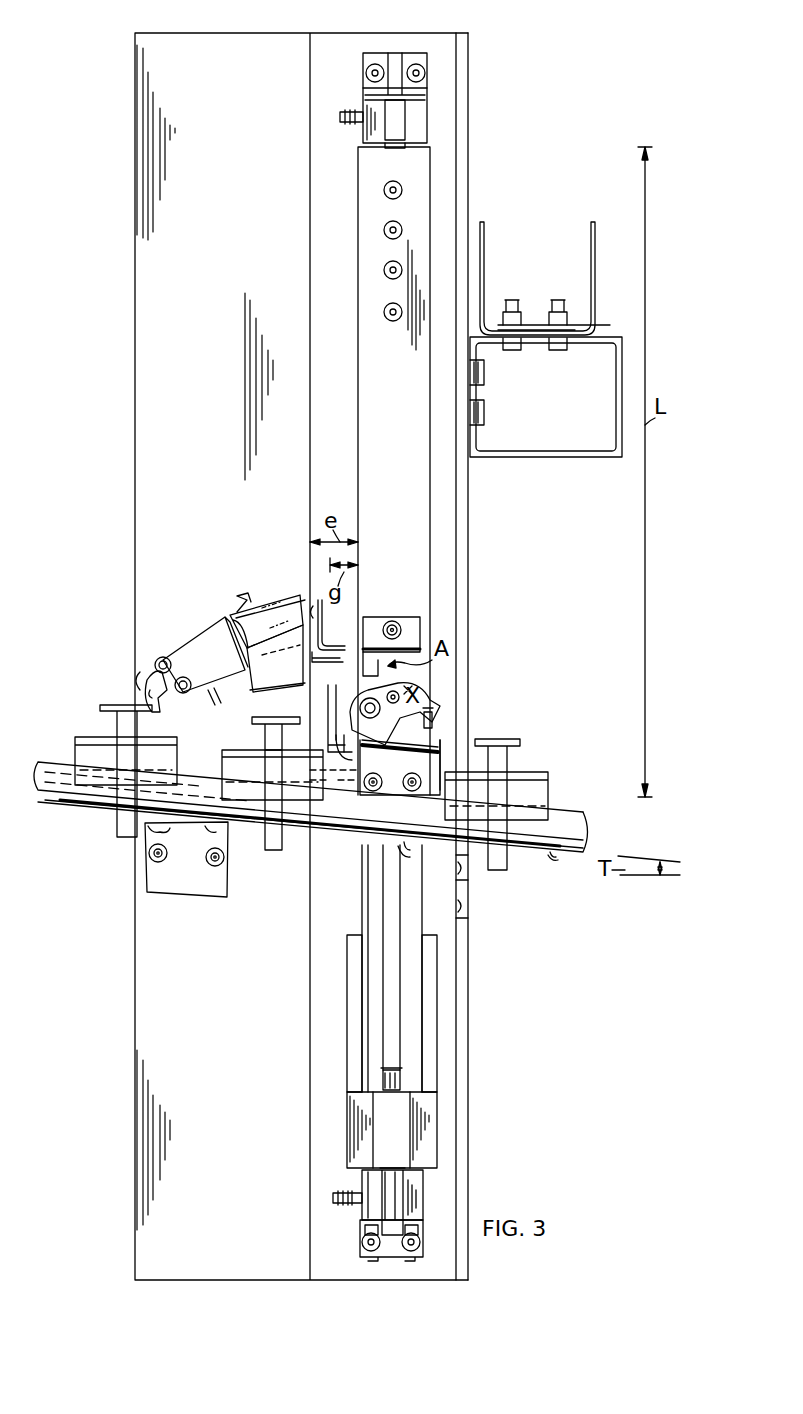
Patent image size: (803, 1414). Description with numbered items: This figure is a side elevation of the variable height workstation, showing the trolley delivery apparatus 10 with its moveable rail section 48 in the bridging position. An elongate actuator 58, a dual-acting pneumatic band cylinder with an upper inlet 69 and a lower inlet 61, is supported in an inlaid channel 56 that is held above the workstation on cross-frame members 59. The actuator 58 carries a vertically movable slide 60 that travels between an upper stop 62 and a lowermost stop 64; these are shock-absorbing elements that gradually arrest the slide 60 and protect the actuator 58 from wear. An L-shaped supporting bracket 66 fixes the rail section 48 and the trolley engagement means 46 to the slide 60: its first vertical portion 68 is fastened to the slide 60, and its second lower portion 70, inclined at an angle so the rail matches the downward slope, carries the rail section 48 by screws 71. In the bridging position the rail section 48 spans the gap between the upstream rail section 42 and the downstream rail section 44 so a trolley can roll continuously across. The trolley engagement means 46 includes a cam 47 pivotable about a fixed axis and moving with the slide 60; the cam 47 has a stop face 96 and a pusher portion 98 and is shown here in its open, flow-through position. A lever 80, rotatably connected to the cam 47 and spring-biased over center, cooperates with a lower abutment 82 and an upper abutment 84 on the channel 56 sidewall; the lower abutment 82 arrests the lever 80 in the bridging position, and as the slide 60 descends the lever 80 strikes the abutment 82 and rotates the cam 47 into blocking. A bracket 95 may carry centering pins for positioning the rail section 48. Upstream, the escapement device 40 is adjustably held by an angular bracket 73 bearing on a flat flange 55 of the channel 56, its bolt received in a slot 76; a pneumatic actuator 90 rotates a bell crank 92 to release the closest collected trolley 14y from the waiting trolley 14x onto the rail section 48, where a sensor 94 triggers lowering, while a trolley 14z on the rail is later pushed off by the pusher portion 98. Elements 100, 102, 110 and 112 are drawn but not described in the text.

The trolley delivery apparatus 10 is at (484, 134).
The collected trolley 14x is at (117, 822).
The accelerated trolley 14y is at (265, 840).
The trolley on moveable rail 14z is at (508, 852).
The upstream escapement device 40 is at (198, 625).
The upstream rail section 42 is at (60, 800).
The downstream rail section 44 is at (572, 820).
The trolley engagement means 46 is at (434, 642).
The cam 47 is at (400, 690).
The moveable rail section 48 is at (418, 846).
The flat flange 55 is at (135, 303).
The inlaid channel 56 is at (448, 45).
The actuator 58 is at (411, 50).
The cross-frame members 59 is at (552, 246).
The slide 60 is at (358, 428).
The lower inlet 61 is at (345, 1203).
The upper stop 62 is at (398, 118).
The lowermost stop 64 is at (381, 1082).
The L-shaped supporting bracket 66 is at (298, 838).
The first vertical bracket portion 68 is at (432, 770).
The upper air fitting 69 is at (342, 114).
The second lower bracket portion 70 is at (371, 965).
The screws 71 is at (449, 865).
The angular bracket 73 is at (252, 685).
The slot 76 is at (330, 666).
The lever 80 is at (342, 713).
The lower abutment 82 is at (346, 744).
The upper abutment 84 is at (350, 640).
The pneumatic actuator 90 is at (276, 610).
The bell crank 92 is at (140, 672).
The sensor 94 is at (262, 730).
The bracket 95 is at (334, 776).
The stop face 96 is at (432, 712).
The pusher portion 98 is at (401, 754).
The lower cylinder 100 is at (437, 1122).
The cylinder block 102 is at (347, 1122).
The guide channel 110 is at (437, 975).
The guide channel 112 is at (347, 975).